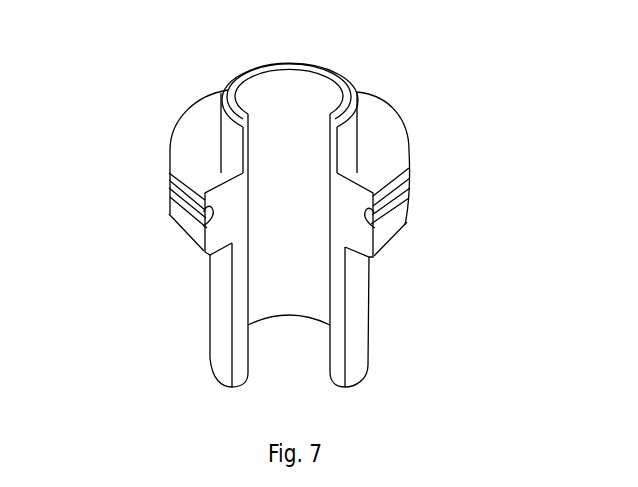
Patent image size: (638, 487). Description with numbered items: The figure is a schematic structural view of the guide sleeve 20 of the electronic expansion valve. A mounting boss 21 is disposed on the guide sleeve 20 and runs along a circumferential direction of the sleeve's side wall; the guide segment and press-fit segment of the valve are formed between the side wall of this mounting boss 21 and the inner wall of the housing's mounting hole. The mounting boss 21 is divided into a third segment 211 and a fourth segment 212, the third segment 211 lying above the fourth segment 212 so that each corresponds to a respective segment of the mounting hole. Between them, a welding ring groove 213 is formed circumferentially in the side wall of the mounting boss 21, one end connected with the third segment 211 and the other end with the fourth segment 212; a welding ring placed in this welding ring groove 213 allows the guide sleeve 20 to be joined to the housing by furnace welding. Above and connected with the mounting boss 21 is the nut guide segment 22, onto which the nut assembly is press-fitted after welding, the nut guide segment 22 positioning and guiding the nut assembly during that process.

The guide sleeve 20 is at (294, 199).
The mounting boss 21 is at (293, 186).
The nut guide segment 22 is at (243, 175).
The third segment 211 is at (529, 189).
The fourth segment 212 is at (360, 250).
The welding ring groove 213 is at (207, 211).